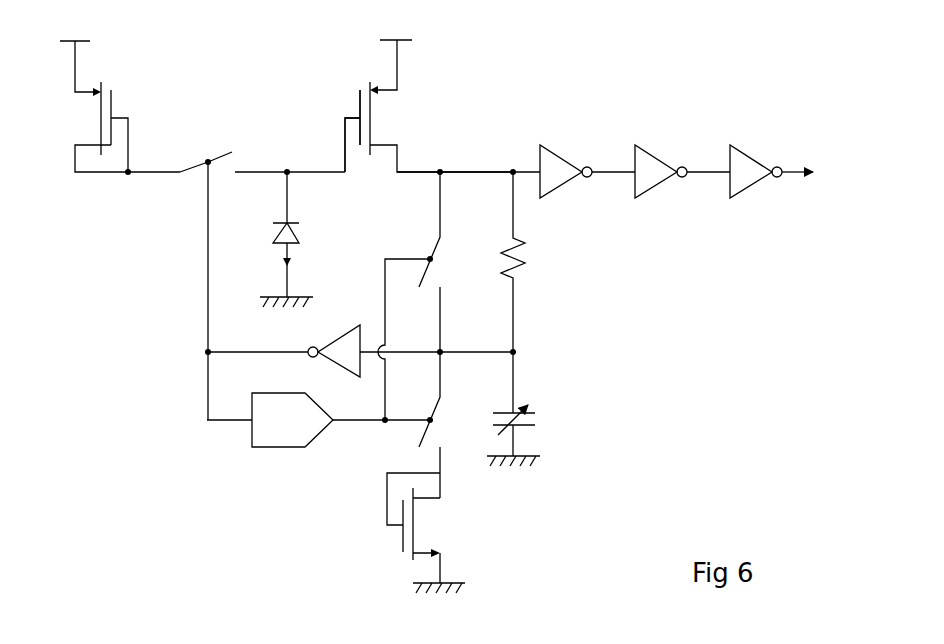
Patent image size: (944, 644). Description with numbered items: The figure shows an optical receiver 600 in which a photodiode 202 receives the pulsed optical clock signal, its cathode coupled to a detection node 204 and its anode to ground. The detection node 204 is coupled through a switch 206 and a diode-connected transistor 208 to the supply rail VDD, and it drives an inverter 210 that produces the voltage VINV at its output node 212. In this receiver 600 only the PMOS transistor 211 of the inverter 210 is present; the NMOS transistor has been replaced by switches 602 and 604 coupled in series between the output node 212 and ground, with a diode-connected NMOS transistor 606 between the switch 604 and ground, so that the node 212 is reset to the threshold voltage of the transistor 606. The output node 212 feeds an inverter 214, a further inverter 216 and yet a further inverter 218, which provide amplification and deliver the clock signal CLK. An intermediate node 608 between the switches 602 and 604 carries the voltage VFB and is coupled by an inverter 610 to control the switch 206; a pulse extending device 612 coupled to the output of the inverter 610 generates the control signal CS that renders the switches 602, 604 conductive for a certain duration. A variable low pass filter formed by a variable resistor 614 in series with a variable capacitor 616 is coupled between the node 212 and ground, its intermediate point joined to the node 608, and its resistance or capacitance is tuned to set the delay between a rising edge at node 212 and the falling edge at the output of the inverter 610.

The optical receiver 600 is at (733, 68).
The photodiode 202 is at (300, 232).
The detection node 204 is at (284, 175).
The switch 206 is at (220, 155).
The diode-connected transistor 208 is at (123, 110).
The inverter 210 is at (348, 108).
The PMOS transistor 211 is at (388, 117).
The output node 212 is at (443, 175).
The inverter 214 is at (557, 162).
The further inverter 216 is at (648, 162).
The yet a further inverter 218 is at (747, 162).
The switch 602 is at (435, 267).
The switch 604 is at (438, 416).
The diode-connected NMOS transistor 606 is at (422, 513).
The intermediate node 608 is at (443, 347).
The inverter 610 is at (342, 340).
The pulse extending device 612 is at (278, 440).
The variable resistor 614 is at (528, 247).
The variable capacitor 616 is at (538, 420).